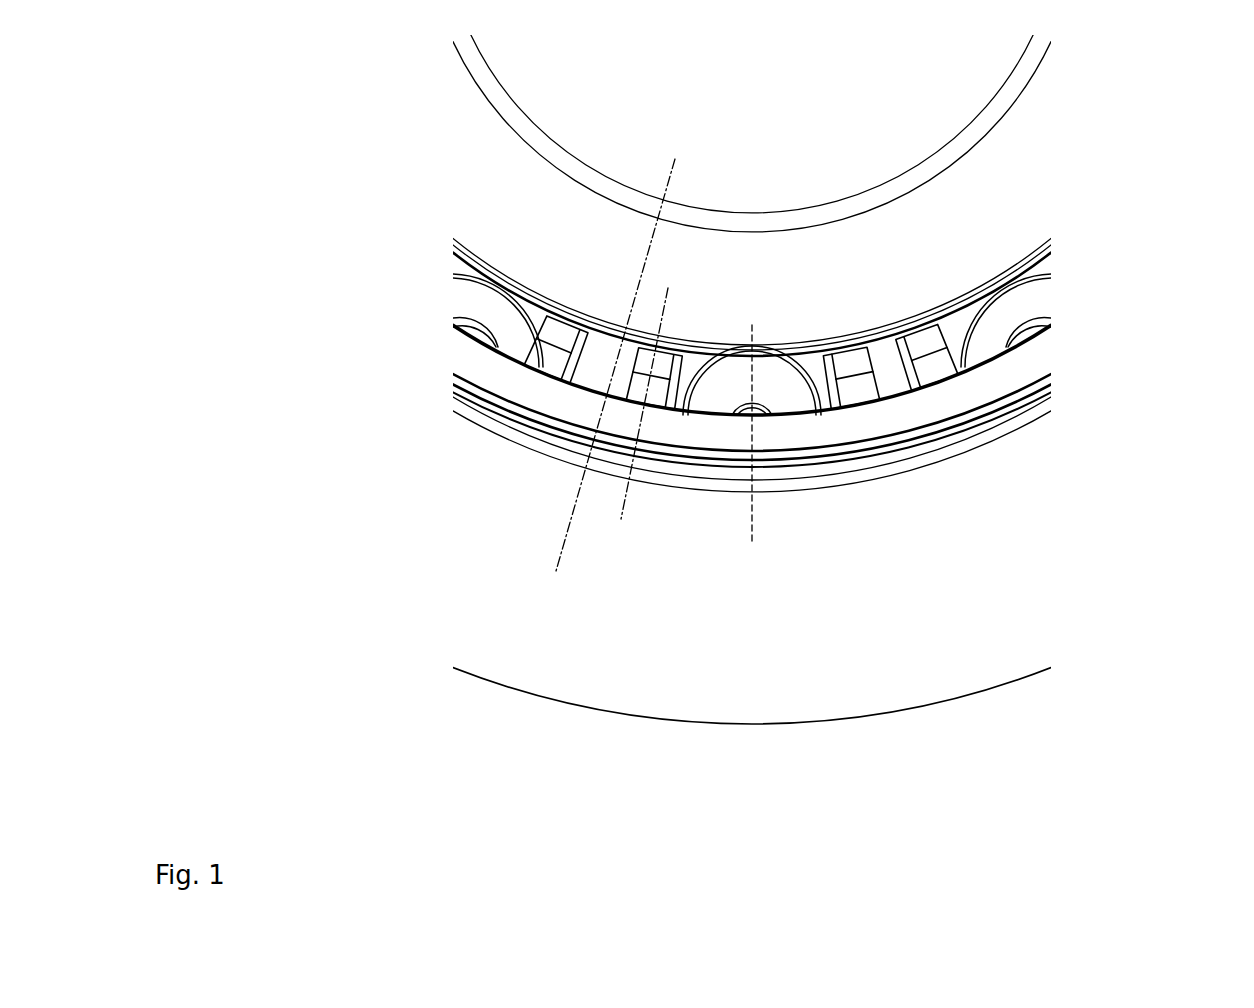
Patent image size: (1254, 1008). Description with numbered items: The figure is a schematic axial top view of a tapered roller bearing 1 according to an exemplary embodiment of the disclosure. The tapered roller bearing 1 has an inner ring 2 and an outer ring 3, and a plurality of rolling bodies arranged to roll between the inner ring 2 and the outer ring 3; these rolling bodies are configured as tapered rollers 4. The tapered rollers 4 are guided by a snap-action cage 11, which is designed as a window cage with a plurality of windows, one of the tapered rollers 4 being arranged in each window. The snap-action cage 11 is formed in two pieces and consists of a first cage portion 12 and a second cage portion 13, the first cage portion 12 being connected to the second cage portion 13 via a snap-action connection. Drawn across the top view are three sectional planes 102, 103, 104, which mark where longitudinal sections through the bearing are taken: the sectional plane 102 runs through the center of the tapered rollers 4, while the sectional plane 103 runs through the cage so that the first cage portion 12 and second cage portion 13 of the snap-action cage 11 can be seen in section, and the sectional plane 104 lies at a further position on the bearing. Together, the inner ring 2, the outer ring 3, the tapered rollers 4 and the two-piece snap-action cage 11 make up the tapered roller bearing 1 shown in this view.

The tapered roller bearing 1 is at (1133, 150).
The inner ring 2 is at (946, 267).
The outer ring 3 is at (1010, 639).
The tapered rollers 4 is at (502, 308).
The snap-action cage 11 is at (1083, 332).
The first cage portion 12 is at (915, 345).
The second cage portion 13 is at (975, 398).
The sectional plane 102 is at (752, 540).
The sectional plane 103 is at (710, 540).
The sectional plane 104 is at (633, 597).